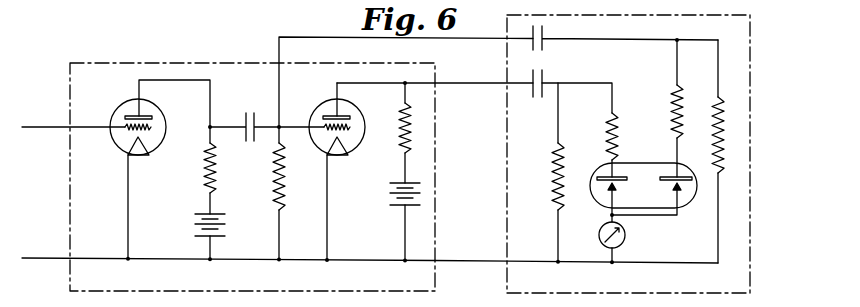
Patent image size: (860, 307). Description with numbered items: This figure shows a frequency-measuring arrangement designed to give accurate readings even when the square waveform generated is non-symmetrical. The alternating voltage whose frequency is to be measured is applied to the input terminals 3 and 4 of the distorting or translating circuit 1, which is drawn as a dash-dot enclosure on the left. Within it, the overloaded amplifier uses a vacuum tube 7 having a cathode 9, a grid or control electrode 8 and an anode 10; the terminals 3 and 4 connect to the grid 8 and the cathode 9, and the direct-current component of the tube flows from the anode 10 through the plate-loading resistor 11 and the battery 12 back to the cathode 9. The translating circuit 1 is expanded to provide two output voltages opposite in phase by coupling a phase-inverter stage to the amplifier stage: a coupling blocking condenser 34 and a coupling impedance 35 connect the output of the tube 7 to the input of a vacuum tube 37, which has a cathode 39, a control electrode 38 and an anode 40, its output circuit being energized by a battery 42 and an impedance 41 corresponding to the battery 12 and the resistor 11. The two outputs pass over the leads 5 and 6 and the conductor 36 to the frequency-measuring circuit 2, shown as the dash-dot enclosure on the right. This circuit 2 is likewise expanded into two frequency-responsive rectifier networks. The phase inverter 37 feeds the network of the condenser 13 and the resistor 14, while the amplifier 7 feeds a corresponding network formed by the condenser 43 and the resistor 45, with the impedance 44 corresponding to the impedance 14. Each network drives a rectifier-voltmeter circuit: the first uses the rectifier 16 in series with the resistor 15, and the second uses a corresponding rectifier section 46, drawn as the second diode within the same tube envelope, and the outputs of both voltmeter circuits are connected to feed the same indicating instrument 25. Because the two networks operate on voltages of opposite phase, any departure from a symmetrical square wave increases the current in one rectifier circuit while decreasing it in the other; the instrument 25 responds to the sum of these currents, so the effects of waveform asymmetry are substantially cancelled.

The distorting or translating circuit 1 is at (140, 63).
The frequency-measuring circuit 2 is at (507, 17).
The input terminal 3 is at (33, 127).
The input terminal 4 is at (35, 258).
The connecting lead 5 is at (459, 83).
The connecting lead 6 is at (464, 263).
The vacuum tube 7 is at (150, 166).
The grid or control electrode 8 is at (156, 128).
The cathode 9 is at (152, 147).
The anode 10 is at (148, 116).
The resistor 11 is at (216, 176).
The battery 12 is at (196, 229).
The condenser 13 is at (537, 97).
The resistor 14 is at (552, 186).
The resistor 15 is at (617, 118).
The rectifier 16 is at (608, 187).
The indicating instrument 25 is at (625, 237).
The coupling blocking condenser 34 is at (246, 112).
The coupling impedance 35 is at (285, 198).
The conductor 36 is at (333, 37).
The vacuum tube 37 is at (333, 167).
The control electrode 38 is at (352, 132).
The cathode 39 is at (348, 152).
The anode 40 is at (345, 116).
The impedance 41 is at (412, 139).
The battery 42 is at (392, 201).
The condenser 43 is at (543, 45).
The impedance 44 is at (713, 132).
The resistor 45 is at (682, 105).
The rectifier diode section 46 is at (682, 186).